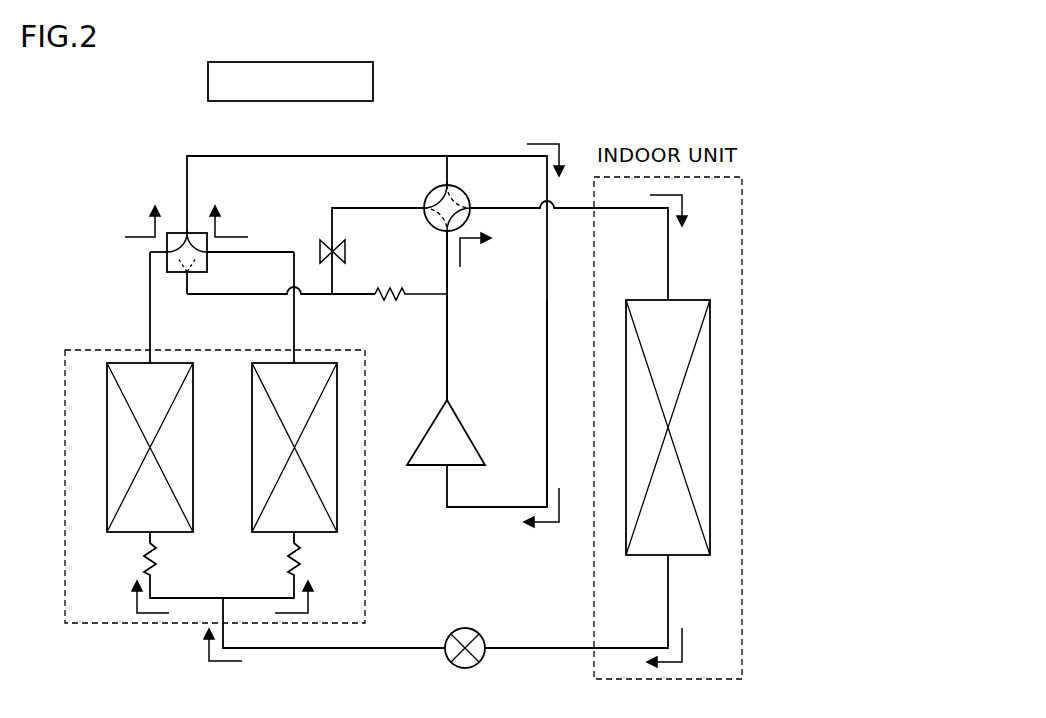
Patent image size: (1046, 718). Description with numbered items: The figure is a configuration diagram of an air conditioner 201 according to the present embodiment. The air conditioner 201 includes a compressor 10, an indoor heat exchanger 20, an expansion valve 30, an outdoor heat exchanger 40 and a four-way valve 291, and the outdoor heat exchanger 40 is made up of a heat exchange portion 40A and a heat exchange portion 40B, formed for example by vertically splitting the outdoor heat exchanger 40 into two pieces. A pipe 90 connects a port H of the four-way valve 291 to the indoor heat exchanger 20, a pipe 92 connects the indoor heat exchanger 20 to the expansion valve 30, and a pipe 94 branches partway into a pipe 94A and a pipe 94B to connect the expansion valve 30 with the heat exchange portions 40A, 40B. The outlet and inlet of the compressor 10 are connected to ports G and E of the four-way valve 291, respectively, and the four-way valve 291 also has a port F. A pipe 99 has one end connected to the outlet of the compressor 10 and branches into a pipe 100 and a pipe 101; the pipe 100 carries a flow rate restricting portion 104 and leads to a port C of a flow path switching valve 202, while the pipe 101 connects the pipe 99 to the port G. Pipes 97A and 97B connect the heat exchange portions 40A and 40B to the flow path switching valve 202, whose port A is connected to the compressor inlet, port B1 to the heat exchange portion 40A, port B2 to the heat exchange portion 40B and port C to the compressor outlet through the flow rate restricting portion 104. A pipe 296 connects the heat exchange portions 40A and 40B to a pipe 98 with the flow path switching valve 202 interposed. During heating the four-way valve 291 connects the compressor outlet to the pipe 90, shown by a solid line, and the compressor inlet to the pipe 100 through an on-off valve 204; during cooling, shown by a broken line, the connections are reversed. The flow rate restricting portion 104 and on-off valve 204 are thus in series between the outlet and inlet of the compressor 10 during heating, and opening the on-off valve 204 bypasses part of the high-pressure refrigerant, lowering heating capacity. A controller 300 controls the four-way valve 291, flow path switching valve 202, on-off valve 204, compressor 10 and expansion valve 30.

The air conditioner 201 is at (137, 84).
The controller 300 is at (375, 72).
The pipe 296 is at (250, 155).
The four-way valve 291 is at (440, 188).
The flow path switching valve 202 is at (178, 222).
The on-off valve 204 is at (324, 244).
The flow rate restricting portion 104 is at (388, 300).
The pipe 100 is at (306, 297).
The pipe 101 is at (449, 281).
The pipe 99 is at (449, 366).
The pipe 98 is at (550, 277).
The pipe 90 is at (515, 212).
The pipe 92 is at (545, 646).
The pipe 94 is at (353, 650).
The pipe 94A is at (184, 603).
The pipe 94B is at (262, 603).
The pipe 97A is at (149, 325).
The pipe 97B is at (293, 325).
The outdoor heat exchanger 40 is at (96, 626).
The heat exchange portion 40A is at (118, 535).
The heat exchange portion 40B is at (325, 535).
The indoor heat exchanger 20 is at (682, 300).
The compressor 10 is at (466, 428).
The expansion valve 30 is at (471, 666).
The port A is at (188, 238).
The port B1 is at (166, 250).
The port B2 is at (207, 255).
The port C is at (190, 272).
The port E is at (452, 187).
The port F is at (425, 204).
The port G is at (446, 232).
The port H is at (470, 210).